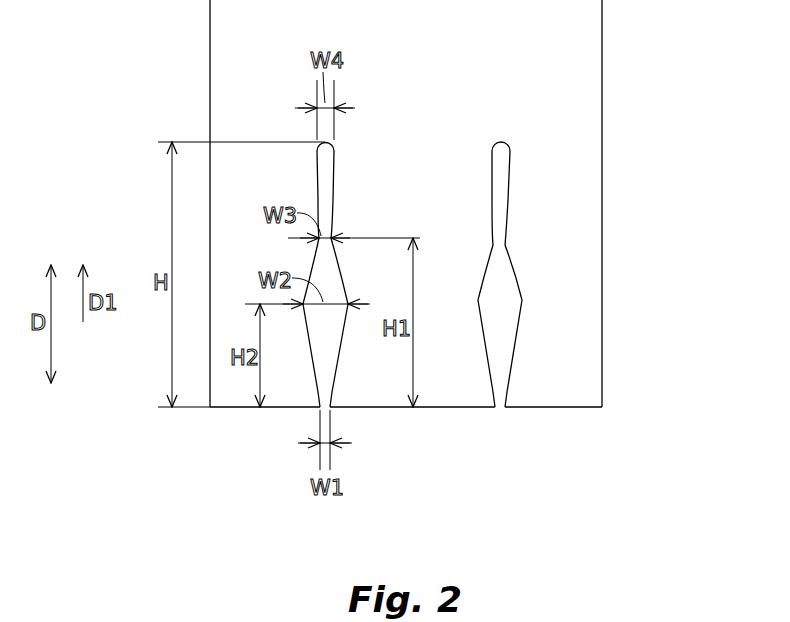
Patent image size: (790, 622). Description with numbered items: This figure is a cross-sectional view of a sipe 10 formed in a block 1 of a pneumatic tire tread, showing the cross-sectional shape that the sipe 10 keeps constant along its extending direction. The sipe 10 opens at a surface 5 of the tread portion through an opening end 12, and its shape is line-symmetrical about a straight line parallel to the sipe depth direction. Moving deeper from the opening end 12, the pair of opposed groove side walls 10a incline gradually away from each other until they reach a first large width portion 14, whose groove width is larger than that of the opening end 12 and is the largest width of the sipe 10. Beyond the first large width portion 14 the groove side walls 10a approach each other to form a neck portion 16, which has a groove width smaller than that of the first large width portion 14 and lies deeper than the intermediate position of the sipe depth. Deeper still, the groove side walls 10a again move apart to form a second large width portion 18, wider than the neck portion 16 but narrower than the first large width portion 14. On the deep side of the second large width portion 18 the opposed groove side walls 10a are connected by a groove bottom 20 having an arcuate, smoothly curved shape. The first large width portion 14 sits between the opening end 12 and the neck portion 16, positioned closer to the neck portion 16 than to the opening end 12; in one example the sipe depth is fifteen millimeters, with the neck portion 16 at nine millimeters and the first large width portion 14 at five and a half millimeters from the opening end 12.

The block 1 is at (583, 52).
The surface of tread portion 5 is at (560, 408).
The sipe 10 is at (464, 288).
The groove side walls 10a is at (313, 275).
The opening end 12 is at (320, 412).
The first large width portion 14 is at (340, 330).
The neck portion 16 is at (331, 234).
The second large width portion 18 is at (334, 153).
The groove bottom 20 is at (328, 143).